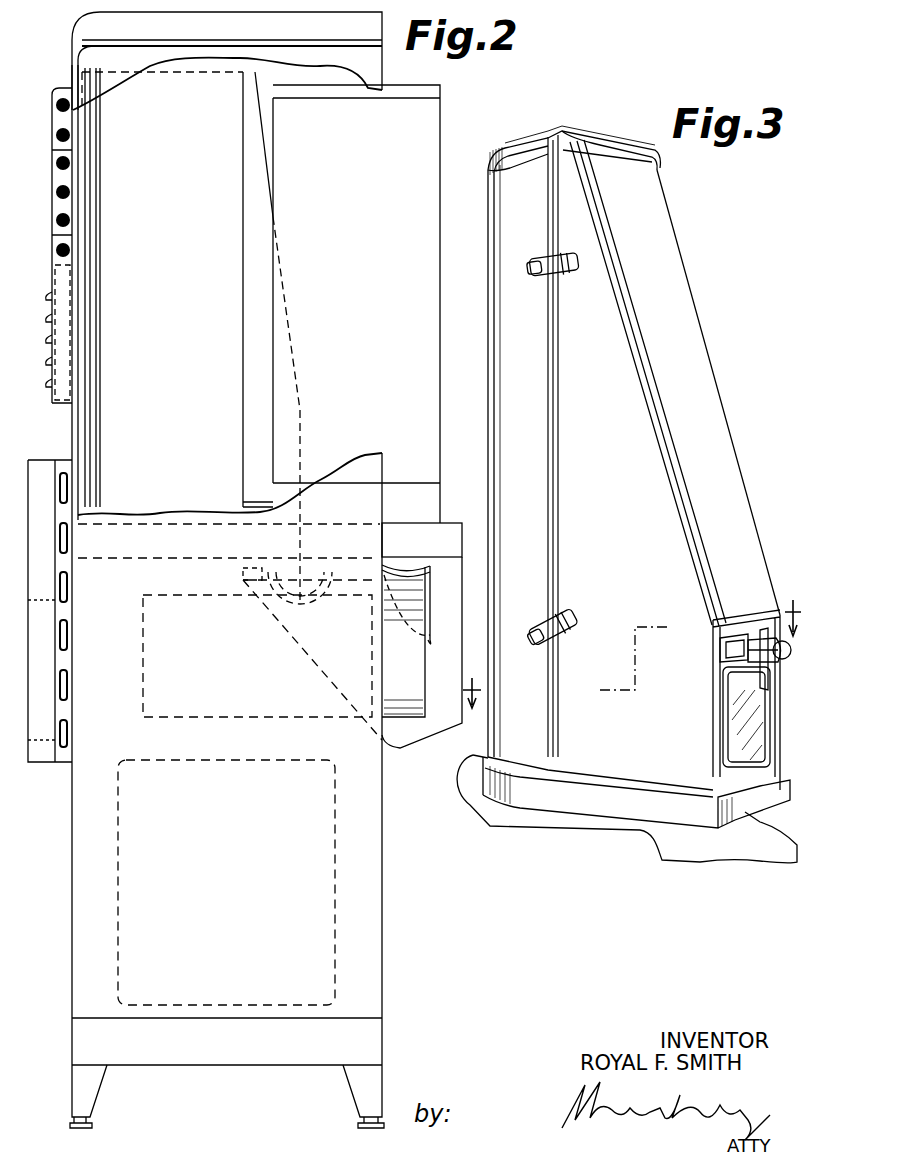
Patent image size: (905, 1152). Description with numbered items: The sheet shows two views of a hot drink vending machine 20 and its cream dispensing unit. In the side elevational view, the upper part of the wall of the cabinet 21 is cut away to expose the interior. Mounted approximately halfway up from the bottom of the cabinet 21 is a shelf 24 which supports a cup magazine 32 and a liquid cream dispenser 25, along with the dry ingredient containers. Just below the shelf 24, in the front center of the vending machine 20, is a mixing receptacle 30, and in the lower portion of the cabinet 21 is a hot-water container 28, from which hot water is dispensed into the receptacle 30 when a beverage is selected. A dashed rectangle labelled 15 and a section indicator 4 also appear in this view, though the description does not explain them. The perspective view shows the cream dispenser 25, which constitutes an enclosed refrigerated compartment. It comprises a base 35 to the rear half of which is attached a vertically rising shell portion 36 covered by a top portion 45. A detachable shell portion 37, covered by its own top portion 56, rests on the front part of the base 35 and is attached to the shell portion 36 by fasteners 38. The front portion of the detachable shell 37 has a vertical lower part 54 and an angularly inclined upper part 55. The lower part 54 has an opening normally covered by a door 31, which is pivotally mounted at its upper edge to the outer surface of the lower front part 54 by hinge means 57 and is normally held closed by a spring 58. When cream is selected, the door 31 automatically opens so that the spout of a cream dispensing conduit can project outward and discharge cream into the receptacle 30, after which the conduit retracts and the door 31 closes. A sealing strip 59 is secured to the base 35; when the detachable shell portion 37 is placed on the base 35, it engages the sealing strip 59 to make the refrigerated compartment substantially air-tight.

In FIG. 2, the hot drink vending machine 20 is at (222, 1084).
In FIG. 2, the cabinet 21 is at (92, 34).
In FIG. 2, the liquid cream dispenser 25 is at (199, 238).
In FIG. 3, the liquid cream dispenser 25 is at (474, 384).
In FIG. 2, the cup magazine 32 is at (424, 126).
In FIG. 2, the refrigeration unit 15 is at (166, 622).
In FIG. 2, the mixing receptacle 30 is at (302, 640).
In FIG. 2, the hot-water container 28 is at (138, 790).
In FIG. 2, the section line 4- 4 is at (472, 680).
In FIG. 3, the section line 4- 4 is at (794, 631).
In FIG. 3, the top portion 45 is at (512, 146).
In FIG. 3, the top portion 56 is at (610, 134).
In FIG. 3, the detachable shell portion 37 is at (648, 214).
In FIG. 3, the vertically rising shell portion 36 is at (524, 215).
In FIG. 3, the fasteners 38 is at (562, 260).
In FIG. 3, the angularly inclined upper part 55 is at (722, 496).
In FIG. 3, the spring 58 is at (763, 628).
In FIG. 3, the vertical lower part 54 is at (770, 620).
In FIG. 3, the hinge means 57 is at (728, 651).
In FIG. 3, the base 35 is at (530, 784).
In FIG. 3, the shelf 24 is at (536, 818).
In FIG. 3, the sealing strip 59 is at (608, 778).
In FIG. 3, the door 31 is at (748, 745).